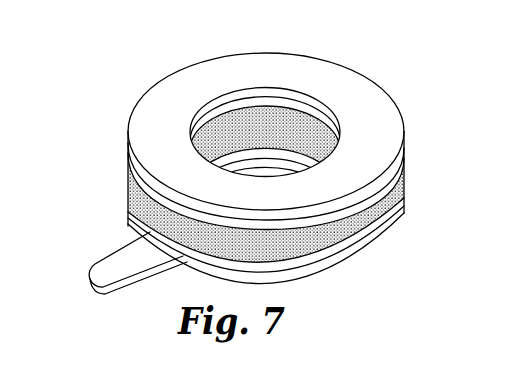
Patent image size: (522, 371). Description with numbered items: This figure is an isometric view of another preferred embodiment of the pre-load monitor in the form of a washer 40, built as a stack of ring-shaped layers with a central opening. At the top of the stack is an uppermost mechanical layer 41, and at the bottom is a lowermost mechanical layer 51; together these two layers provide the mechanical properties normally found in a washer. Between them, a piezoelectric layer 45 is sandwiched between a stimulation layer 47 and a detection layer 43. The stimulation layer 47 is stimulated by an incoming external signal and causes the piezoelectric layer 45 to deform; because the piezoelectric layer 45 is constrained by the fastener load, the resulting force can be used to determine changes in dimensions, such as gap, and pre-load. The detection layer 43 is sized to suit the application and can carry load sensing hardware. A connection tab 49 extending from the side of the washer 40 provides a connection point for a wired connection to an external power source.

The washer 40 is at (125, 112).
The uppermost mechanical layer 41 is at (285, 63).
The detection layer 43 is at (147, 193).
The piezoelectric layer 45 is at (405, 185).
The stimulation layer 47 is at (137, 230).
The connection tab 49 is at (102, 280).
The lowermost mechanical layer 51 is at (338, 267).